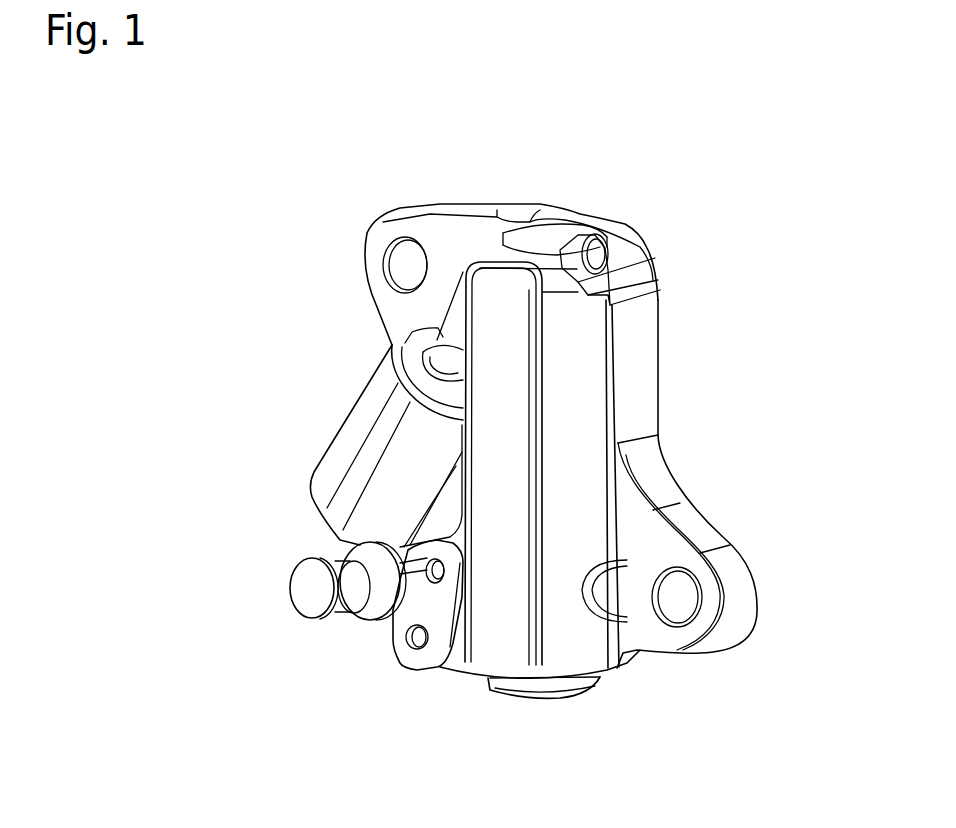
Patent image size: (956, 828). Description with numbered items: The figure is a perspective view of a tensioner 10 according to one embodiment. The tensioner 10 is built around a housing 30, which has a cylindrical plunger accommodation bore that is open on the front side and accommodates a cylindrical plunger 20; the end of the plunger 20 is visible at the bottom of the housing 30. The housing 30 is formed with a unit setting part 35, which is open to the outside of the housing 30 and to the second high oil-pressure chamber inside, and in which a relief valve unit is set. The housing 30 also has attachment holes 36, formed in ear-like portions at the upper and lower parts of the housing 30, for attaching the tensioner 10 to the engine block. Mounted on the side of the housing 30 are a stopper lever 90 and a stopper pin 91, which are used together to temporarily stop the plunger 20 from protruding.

The tensioner 10 is at (237, 197).
The plunger 20 is at (573, 690).
The housing 30 is at (582, 420).
The unit setting part 35 is at (345, 450).
The attachment holes 36 is at (405, 262).
The stopper lever 90 is at (428, 610).
The stopper pin 91 is at (313, 593).